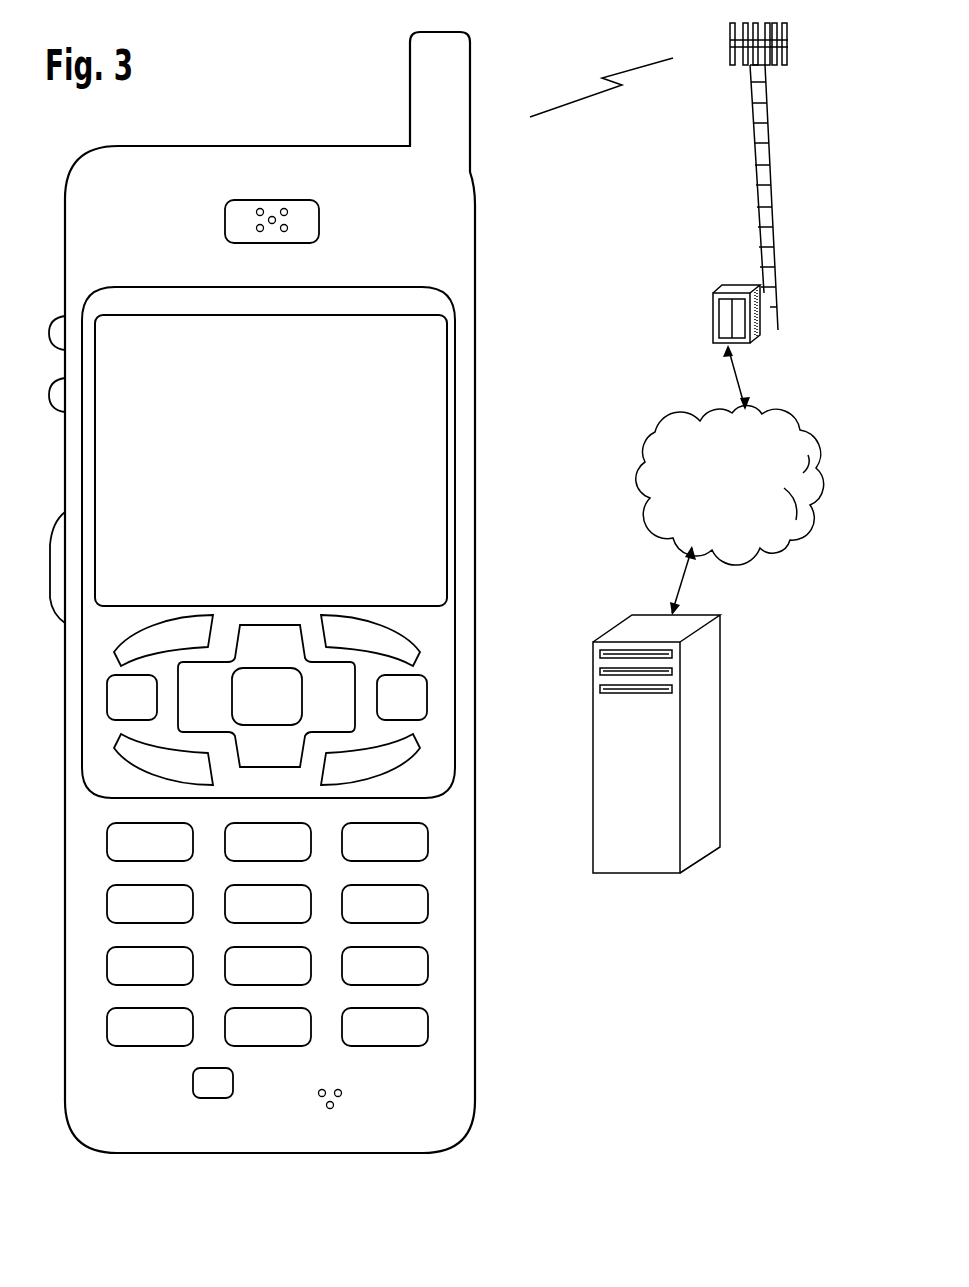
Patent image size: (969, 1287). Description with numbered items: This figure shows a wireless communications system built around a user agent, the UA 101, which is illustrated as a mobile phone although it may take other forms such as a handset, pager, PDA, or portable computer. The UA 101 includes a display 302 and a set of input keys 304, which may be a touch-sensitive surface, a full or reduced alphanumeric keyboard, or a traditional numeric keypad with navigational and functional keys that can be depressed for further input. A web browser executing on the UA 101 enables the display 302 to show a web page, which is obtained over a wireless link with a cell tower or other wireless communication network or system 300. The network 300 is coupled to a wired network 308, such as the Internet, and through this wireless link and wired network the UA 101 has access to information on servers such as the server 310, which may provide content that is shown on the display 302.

The user agent (UA) 101 is at (117, 1151).
The wireless communication network or system 300 is at (743, 198).
The display 302 is at (447, 330).
The input keys 304 is at (482, 615).
The wired network 308 is at (660, 531).
The server 310 is at (640, 874).